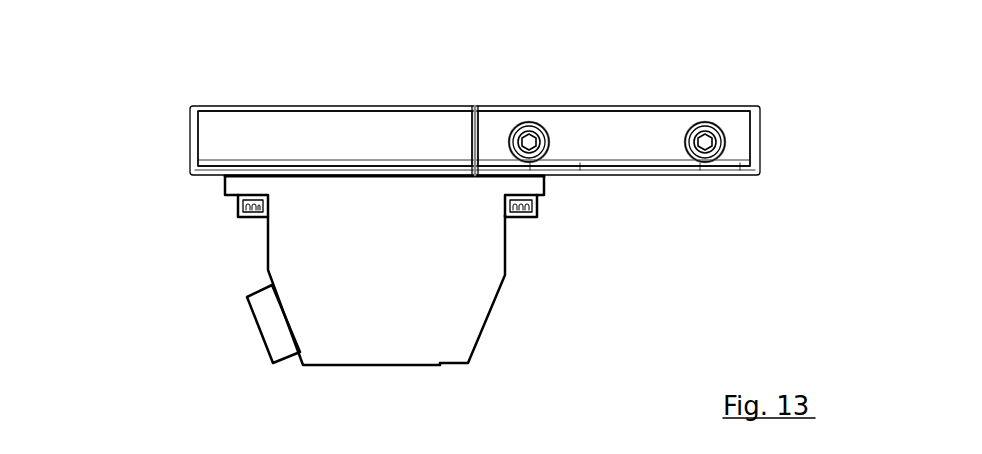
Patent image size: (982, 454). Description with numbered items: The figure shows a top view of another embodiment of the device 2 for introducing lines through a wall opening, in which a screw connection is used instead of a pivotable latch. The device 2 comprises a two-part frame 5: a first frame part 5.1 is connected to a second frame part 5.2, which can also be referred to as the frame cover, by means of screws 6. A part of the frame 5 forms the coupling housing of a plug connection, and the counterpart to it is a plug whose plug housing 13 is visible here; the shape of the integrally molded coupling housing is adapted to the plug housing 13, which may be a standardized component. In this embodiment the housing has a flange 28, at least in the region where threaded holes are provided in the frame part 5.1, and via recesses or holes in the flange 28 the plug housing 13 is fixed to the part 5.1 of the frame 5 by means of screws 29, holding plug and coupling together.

The device 2 is at (140, 67).
The frame 5 is at (446, 108).
The first frame part 5.1 is at (220, 146).
The second frame part 5.2 is at (617, 150).
The screws 6 is at (532, 140).
The plug housing 13 is at (373, 333).
The flange 28 is at (247, 183).
The screws 29 is at (248, 215).